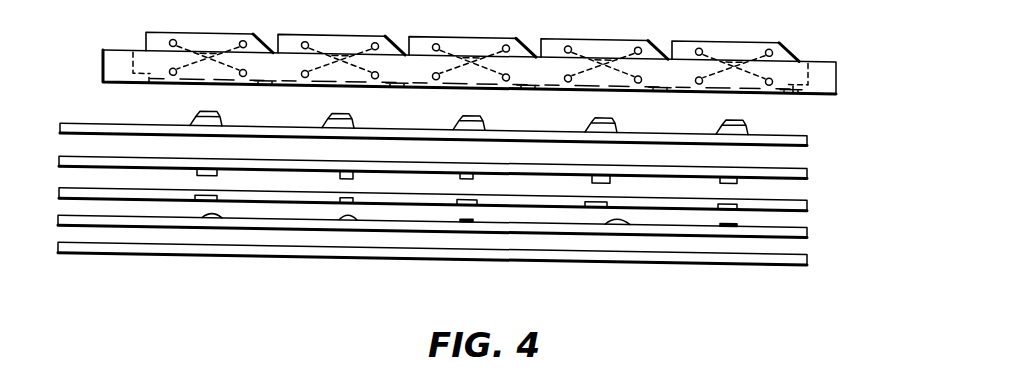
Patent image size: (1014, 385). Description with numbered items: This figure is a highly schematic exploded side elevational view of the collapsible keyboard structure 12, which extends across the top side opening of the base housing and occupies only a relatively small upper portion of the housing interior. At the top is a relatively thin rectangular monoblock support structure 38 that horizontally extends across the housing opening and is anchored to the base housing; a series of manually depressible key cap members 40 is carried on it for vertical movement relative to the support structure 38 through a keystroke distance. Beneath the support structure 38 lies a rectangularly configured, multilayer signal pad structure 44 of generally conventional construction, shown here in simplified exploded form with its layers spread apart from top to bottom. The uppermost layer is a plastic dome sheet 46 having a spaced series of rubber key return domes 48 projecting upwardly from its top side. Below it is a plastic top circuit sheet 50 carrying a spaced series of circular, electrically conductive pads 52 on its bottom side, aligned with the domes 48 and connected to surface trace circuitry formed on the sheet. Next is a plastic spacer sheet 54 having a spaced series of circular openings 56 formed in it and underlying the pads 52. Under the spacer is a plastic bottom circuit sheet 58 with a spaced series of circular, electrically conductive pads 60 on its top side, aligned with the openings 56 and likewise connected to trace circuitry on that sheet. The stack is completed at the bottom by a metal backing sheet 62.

The collapsible keyboard structure 12 is at (86, 81).
The monoblock support structure 38 is at (836, 58).
The key cap members 40 is at (213, 30).
The multilayer signal pad structure 44 is at (818, 118).
The dome sheet 46 is at (110, 121).
The key return domes 48 is at (221, 117).
The top circuit sheet 50 is at (163, 162).
The electrically conductive pads 52 is at (222, 168).
The spacer sheet 54 is at (130, 198).
The circular openings 56 is at (217, 194).
The bottom circuit sheet 58 is at (115, 224).
The electrically conductive pads 60 is at (227, 213).
The metal backing sheet 62 is at (100, 252).